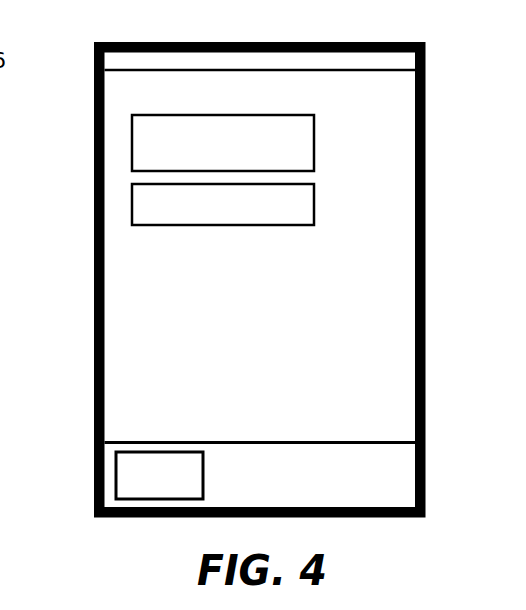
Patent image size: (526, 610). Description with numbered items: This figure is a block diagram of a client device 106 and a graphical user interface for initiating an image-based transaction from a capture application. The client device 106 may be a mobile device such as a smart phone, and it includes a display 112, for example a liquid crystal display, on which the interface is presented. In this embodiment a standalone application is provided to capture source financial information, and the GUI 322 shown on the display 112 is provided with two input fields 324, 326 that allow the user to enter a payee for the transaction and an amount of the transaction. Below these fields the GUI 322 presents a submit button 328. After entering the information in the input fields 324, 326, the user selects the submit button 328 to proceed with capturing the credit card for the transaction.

The client device 106 is at (94, 404).
The display 112 is at (252, 62).
The GUI 322 is at (396, 98).
The input field 324 is at (315, 133).
The input field 326 is at (315, 188).
The submit button 328 is at (204, 480).